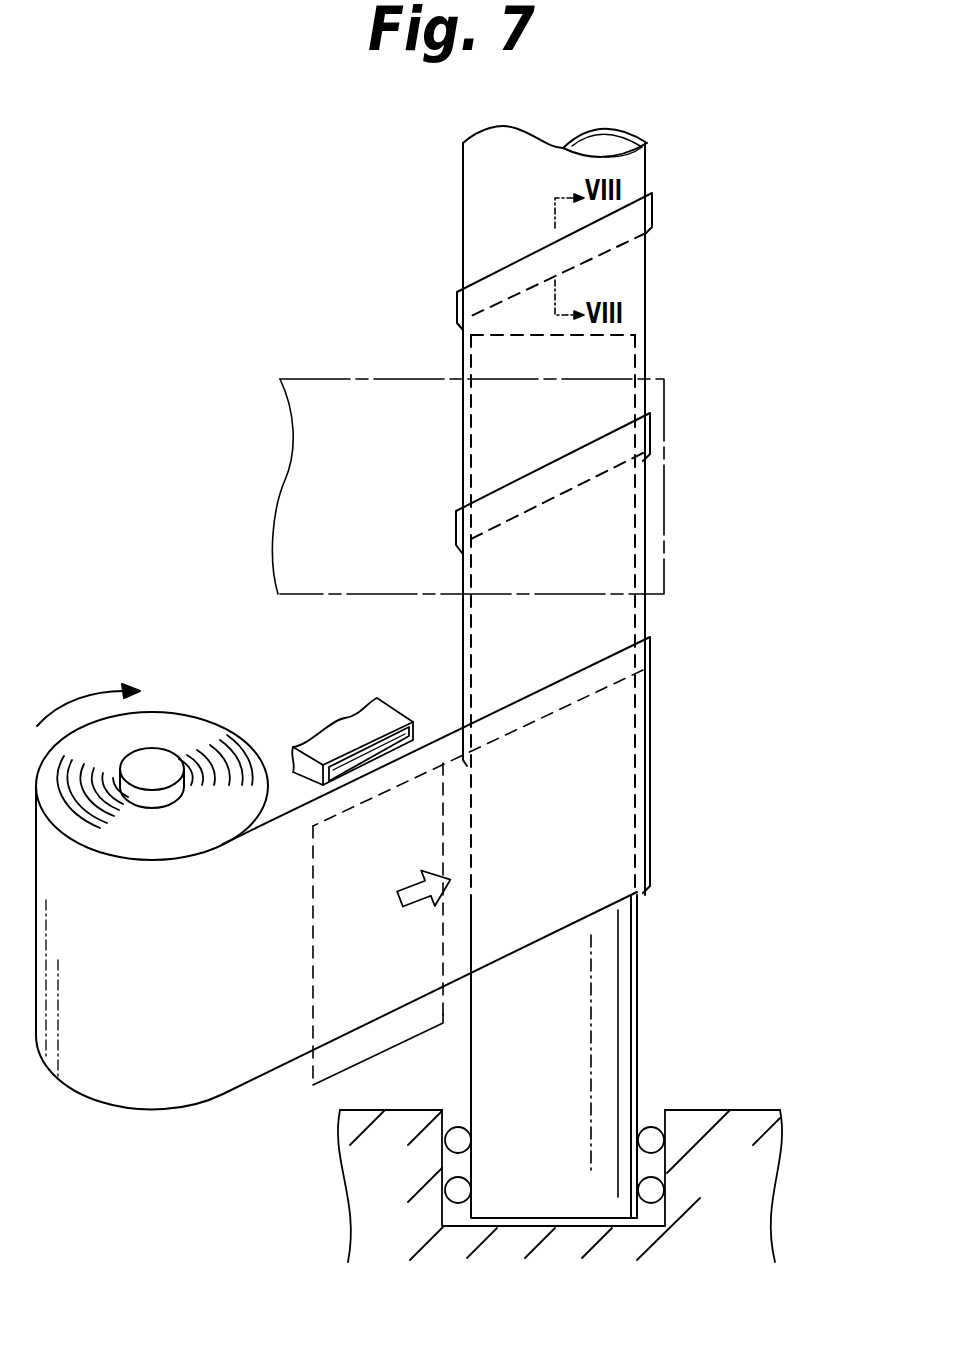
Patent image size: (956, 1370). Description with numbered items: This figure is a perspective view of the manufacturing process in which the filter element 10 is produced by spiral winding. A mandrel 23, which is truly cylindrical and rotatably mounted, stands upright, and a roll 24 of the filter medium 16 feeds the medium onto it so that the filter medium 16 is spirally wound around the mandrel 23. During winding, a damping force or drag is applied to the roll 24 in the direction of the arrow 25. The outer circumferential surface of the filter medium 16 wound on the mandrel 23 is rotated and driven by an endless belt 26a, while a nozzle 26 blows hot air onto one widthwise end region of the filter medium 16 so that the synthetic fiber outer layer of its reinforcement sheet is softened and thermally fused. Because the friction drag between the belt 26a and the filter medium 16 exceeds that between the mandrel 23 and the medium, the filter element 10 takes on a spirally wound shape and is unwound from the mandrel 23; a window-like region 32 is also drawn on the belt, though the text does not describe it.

The filter element 10 is at (622, 279).
The filter medium 16 is at (247, 1063).
The mandrel 23 is at (605, 997).
The roll 24 is at (180, 736).
The arrow 25 is at (75, 703).
The nozzle 26 is at (380, 748).
The endless belt 26a is at (357, 405).
The hidden window 32 is at (333, 1060).